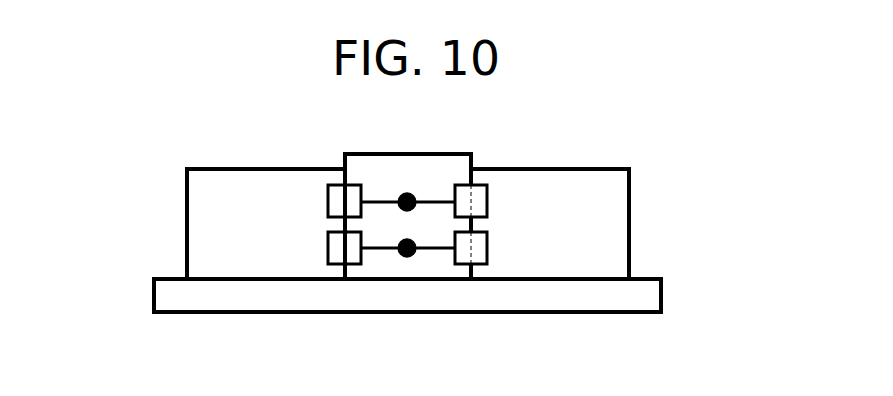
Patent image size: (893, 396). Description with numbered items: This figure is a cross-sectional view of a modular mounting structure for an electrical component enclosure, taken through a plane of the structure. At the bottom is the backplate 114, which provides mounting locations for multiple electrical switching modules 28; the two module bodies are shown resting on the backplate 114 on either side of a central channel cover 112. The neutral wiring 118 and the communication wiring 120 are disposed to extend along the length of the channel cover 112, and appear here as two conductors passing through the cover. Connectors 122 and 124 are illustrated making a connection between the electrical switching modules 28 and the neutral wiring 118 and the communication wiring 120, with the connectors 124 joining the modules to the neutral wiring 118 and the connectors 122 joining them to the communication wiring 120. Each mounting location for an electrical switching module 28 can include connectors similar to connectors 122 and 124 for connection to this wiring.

The electrical switching module 28 is at (168, 169).
The channel cover 112 is at (344, 153).
The backplate 114 is at (227, 312).
The neutral wiring 118 is at (411, 198).
The communication wiring 120 is at (411, 254).
The connector 122 is at (328, 266).
The connector 124 is at (328, 204).